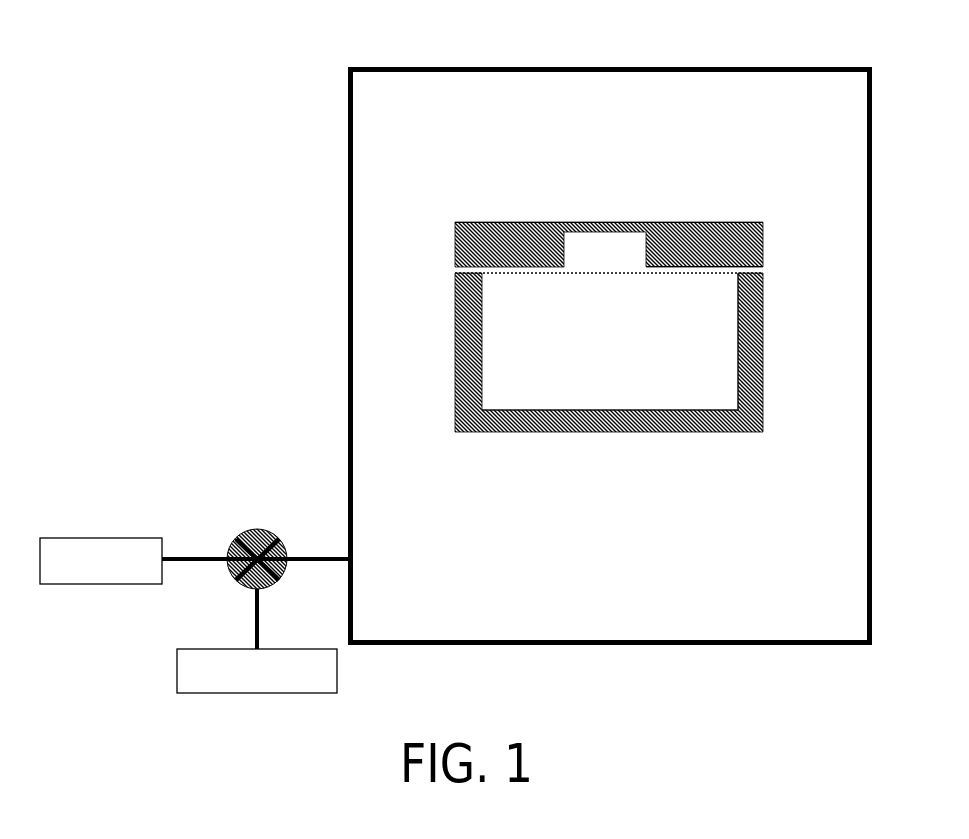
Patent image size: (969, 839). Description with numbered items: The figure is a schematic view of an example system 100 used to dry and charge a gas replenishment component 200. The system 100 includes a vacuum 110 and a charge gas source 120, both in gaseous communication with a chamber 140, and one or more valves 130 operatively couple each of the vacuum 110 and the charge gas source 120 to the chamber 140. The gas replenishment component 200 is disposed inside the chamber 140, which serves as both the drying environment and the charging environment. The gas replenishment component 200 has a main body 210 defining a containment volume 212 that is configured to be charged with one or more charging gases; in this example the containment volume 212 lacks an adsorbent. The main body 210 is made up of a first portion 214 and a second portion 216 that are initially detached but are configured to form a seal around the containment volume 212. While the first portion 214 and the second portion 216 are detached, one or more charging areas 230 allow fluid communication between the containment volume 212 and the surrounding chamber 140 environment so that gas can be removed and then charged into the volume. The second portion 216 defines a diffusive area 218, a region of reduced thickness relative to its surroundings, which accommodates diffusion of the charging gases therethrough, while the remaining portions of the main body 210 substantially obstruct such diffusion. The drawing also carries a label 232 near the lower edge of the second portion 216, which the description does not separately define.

The system 100 is at (72, 75).
The vacuum 110 is at (136, 537).
The charge gas source 120 is at (177, 682).
The valves 130 is at (253, 533).
The chamber 140 is at (350, 68).
The gas replenishment component 200 is at (461, 165).
The main body 210 is at (455, 392).
The containment volume 212 is at (611, 249).
The first portion 214 is at (755, 405).
The second portion 216 is at (510, 227).
The diffusive area 218 is at (597, 222).
The charging areas 230 is at (644, 246).
The lid bottom edge 232 is at (745, 267).